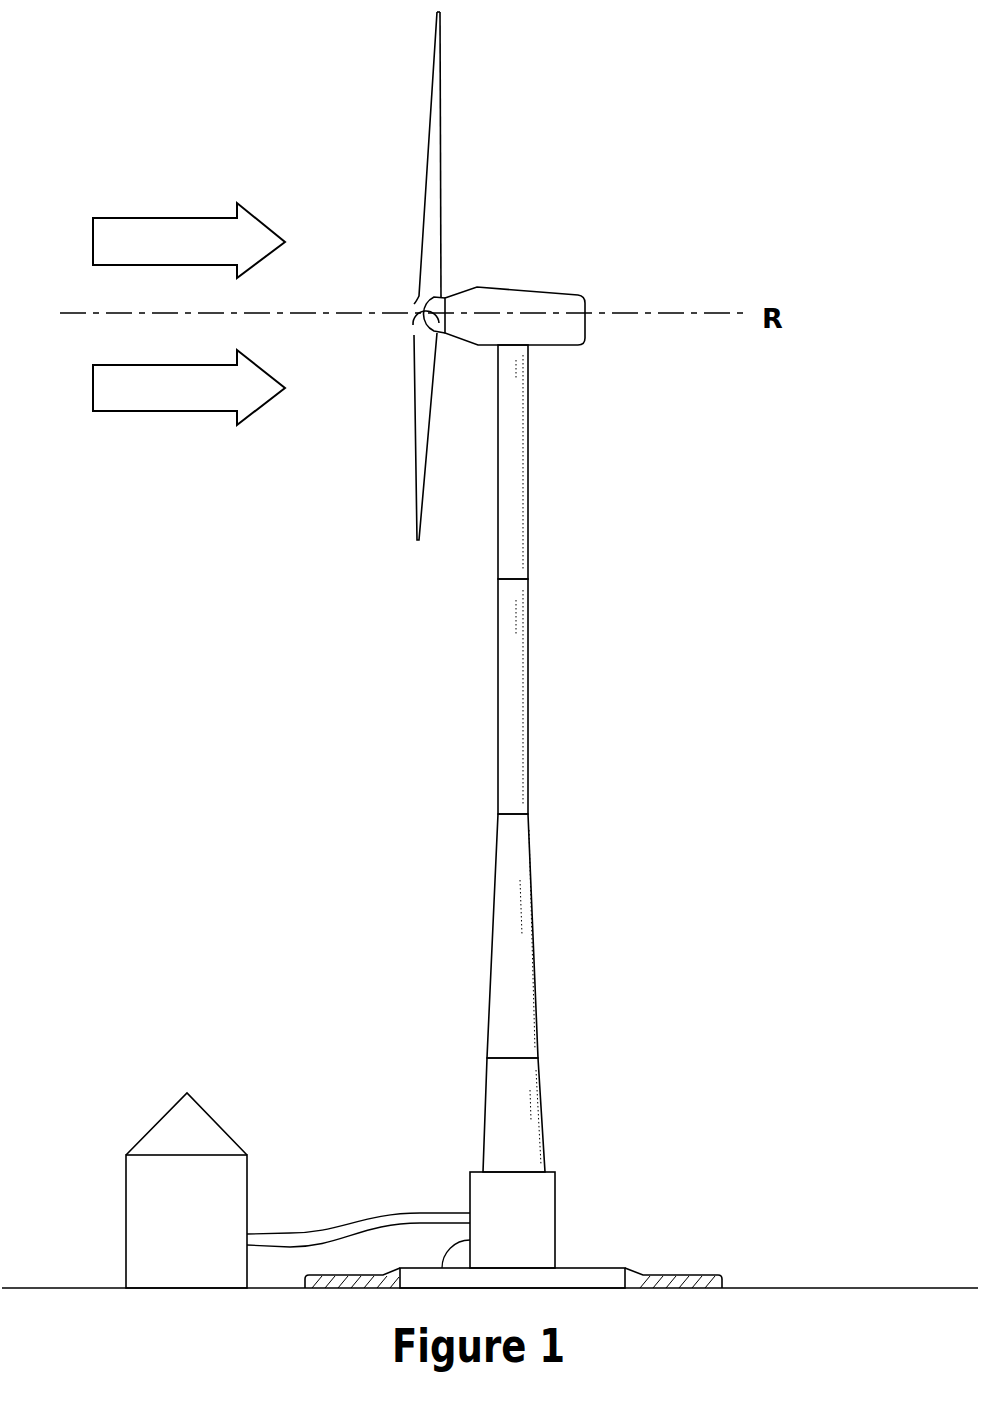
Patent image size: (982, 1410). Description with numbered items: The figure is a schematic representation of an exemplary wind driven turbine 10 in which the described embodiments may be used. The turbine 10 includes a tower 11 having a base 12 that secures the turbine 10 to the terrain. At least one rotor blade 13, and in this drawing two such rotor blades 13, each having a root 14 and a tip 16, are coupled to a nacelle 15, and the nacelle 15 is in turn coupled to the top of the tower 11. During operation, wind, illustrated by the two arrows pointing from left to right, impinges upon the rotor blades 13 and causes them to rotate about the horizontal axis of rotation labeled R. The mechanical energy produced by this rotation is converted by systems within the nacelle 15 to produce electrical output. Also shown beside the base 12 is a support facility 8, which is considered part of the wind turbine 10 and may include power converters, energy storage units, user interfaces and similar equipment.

The support facility 8 is at (148, 1224).
The wind driven turbine 10 is at (549, 650).
The tower 11 is at (529, 700).
The base 12 is at (588, 1267).
The rotor blades 13 is at (430, 180).
The root 14 is at (435, 265).
The nacelle 15 is at (560, 346).
The tip 16 is at (441, 27).